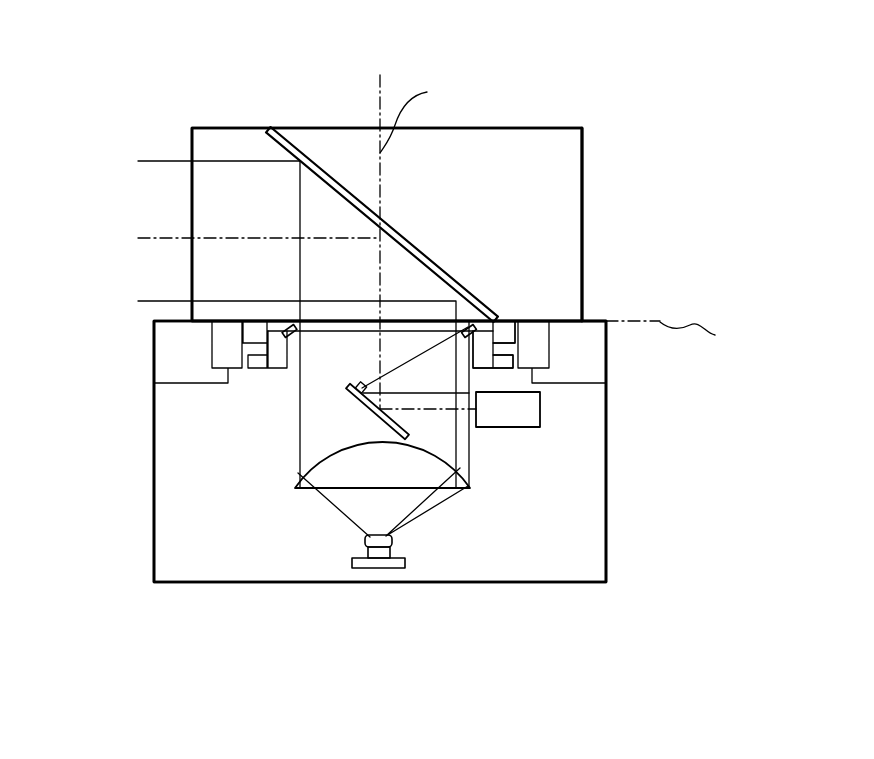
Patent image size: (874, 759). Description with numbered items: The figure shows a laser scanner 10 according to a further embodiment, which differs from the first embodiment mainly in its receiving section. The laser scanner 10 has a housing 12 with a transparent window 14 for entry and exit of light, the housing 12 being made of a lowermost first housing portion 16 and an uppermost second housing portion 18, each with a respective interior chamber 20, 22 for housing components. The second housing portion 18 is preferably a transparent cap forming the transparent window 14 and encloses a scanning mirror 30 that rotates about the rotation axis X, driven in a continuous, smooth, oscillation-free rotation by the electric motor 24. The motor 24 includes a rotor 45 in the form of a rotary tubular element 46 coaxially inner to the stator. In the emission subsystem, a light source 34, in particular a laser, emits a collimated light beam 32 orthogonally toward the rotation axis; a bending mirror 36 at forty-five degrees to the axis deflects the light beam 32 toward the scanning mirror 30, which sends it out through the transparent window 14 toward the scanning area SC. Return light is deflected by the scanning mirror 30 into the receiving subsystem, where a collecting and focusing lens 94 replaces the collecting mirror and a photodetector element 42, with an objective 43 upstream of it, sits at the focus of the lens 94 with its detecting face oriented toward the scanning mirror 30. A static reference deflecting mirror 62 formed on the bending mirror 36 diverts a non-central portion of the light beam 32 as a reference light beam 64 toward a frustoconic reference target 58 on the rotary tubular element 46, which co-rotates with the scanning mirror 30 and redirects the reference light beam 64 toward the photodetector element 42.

The laser scanner 10 is at (108, 121).
The housing 12 is at (630, 298).
The transparent window 14 is at (583, 195).
The first housing portion 16 is at (607, 510).
The second housing portion 18 is at (535, 128).
The interior chamber 20 is at (591, 562).
The interior chamber 22 is at (566, 172).
The electric motor 24 is at (553, 392).
The scanning mirror 30 is at (395, 225).
The light beam 32 is at (232, 237).
The light source 34 is at (517, 427).
The bending mirror 36 is at (358, 402).
The photodetector element 42 is at (365, 555).
The objective 43 is at (393, 540).
The rotor 45 is at (614, 360).
The rotary tubular element 46 is at (485, 350).
The reference target 58 is at (469, 327).
The static reference deflecting mirror 62 is at (362, 385).
The reference light beam 64 is at (388, 382).
The collecting and focusing lens 94 is at (323, 463).